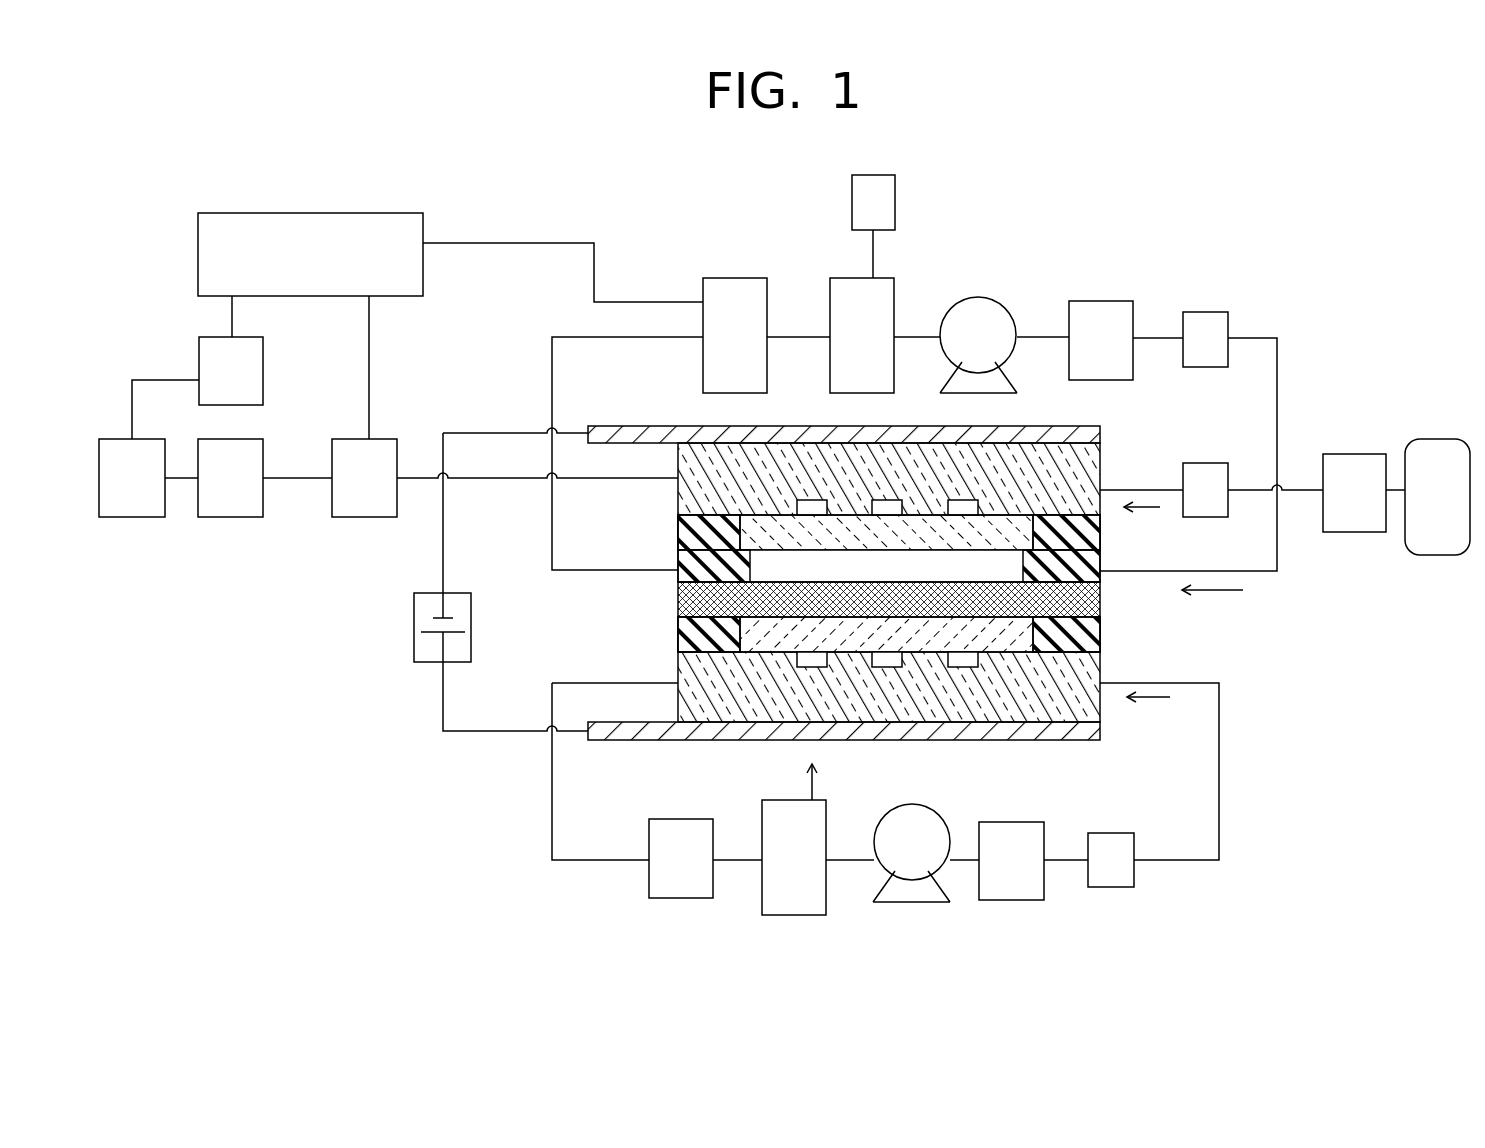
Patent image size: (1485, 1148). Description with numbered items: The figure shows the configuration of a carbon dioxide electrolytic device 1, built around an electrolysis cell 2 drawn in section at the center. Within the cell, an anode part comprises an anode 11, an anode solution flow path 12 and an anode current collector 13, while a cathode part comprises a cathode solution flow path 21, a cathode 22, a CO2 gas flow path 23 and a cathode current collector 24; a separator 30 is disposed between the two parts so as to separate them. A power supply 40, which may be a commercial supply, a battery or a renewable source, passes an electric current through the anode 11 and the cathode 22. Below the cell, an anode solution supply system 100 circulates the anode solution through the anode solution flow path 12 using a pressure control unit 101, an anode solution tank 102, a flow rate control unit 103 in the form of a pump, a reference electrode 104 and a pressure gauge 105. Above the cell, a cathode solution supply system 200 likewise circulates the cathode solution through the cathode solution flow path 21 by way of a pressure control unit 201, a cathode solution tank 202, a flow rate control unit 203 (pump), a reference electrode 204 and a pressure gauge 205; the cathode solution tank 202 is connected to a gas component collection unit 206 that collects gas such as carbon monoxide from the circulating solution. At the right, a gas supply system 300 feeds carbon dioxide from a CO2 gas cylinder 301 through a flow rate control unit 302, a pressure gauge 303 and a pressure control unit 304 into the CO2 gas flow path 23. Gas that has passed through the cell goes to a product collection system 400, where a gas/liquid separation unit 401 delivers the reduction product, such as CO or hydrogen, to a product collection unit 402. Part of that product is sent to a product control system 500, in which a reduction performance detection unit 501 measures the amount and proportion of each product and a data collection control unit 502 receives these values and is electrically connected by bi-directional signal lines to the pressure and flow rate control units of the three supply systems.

The carbon dioxide electrolytic device 1 is at (1158, 217).
The electrolysis cell 2 is at (1142, 637).
The anode 11 is at (760, 636).
The anode solution flow path 12 is at (797, 663).
The anode current collector 13 is at (600, 740).
The cathode solution flow path 21 is at (785, 567).
The cathode 22 is at (768, 534).
The CO2 gas flow path 23 is at (797, 504).
The cathode current collector 24 is at (622, 426).
The separator 30 is at (1098, 609).
The power supply 40 is at (471, 629).
The anode solution supply system 100 is at (1160, 903).
The pressure control unit 101 is at (682, 819).
The anode solution tank 102 is at (778, 800).
The flow rate control unit (pump) 103 is at (912, 804).
The reference electrode 104 is at (1012, 822).
The pressure gauge 105 is at (1112, 833).
The cathode solution supply system 200 is at (1250, 287).
The pressure control unit 201 is at (735, 278).
The cathode solution tank 202 is at (835, 278).
The flow rate control unit (pump) 203 is at (975, 297).
The reference electrode 204 is at (1100, 301).
The pressure gauge 205 is at (1205, 312).
The gas component collection unit 206 is at (895, 205).
The gas supply system 300 is at (1390, 402).
The CO2 gas cylinder 301 is at (1438, 439).
The flow rate control unit 302 is at (1355, 454).
The pressure gauge 303 is at (1213, 463).
The pressure control unit 304 is at (365, 517).
The product collection system 400 is at (258, 575).
The gas/liquid separation unit 401 is at (230, 517).
The product collection unit 402 is at (132, 517).
The product control system 500 is at (438, 208).
The reduction performance detection unit 501 is at (263, 378).
The data collection control unit 502 is at (198, 248).